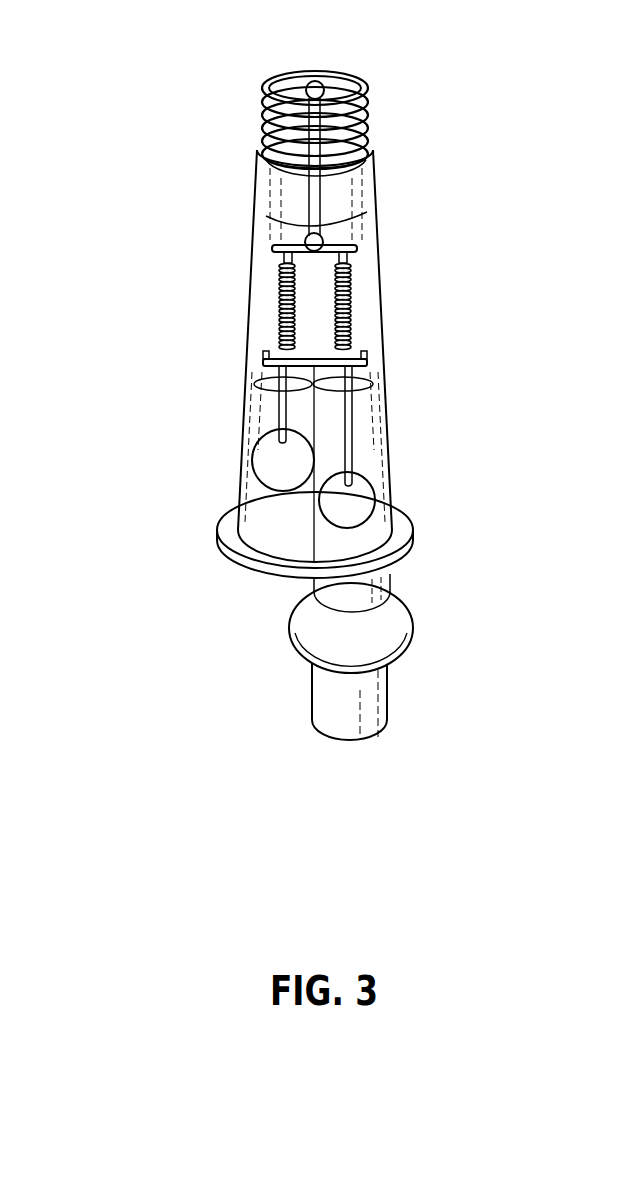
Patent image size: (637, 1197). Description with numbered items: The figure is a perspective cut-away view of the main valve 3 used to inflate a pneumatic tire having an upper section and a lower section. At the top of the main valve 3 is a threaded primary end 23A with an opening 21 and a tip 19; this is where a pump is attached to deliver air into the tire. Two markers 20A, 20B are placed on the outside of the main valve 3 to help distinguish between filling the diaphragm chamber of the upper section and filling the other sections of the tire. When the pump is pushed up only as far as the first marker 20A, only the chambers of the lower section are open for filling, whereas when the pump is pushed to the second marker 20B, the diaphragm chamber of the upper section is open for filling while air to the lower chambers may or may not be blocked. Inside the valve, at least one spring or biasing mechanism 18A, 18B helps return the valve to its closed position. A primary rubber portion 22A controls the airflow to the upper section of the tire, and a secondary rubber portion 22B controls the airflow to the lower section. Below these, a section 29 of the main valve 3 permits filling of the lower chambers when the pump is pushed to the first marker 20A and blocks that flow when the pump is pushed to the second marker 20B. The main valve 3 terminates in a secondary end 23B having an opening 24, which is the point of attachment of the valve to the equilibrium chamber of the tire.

The main valve 3 is at (116, 326).
The spring or biasing mechanism 18A is at (281, 314).
The spring or biasing mechanism 18B is at (350, 314).
The tip 19 is at (323, 82).
The marker 20A is at (366, 167).
The marker 20B is at (345, 220).
The opening 21 is at (288, 88).
The primary rubber portion 22A is at (257, 462).
The secondary rubber portion 22B is at (376, 504).
The threaded primary end 23A is at (306, 73).
The secondary end 23B is at (388, 700).
The opening 24 is at (337, 738).
The section 29 is at (388, 618).